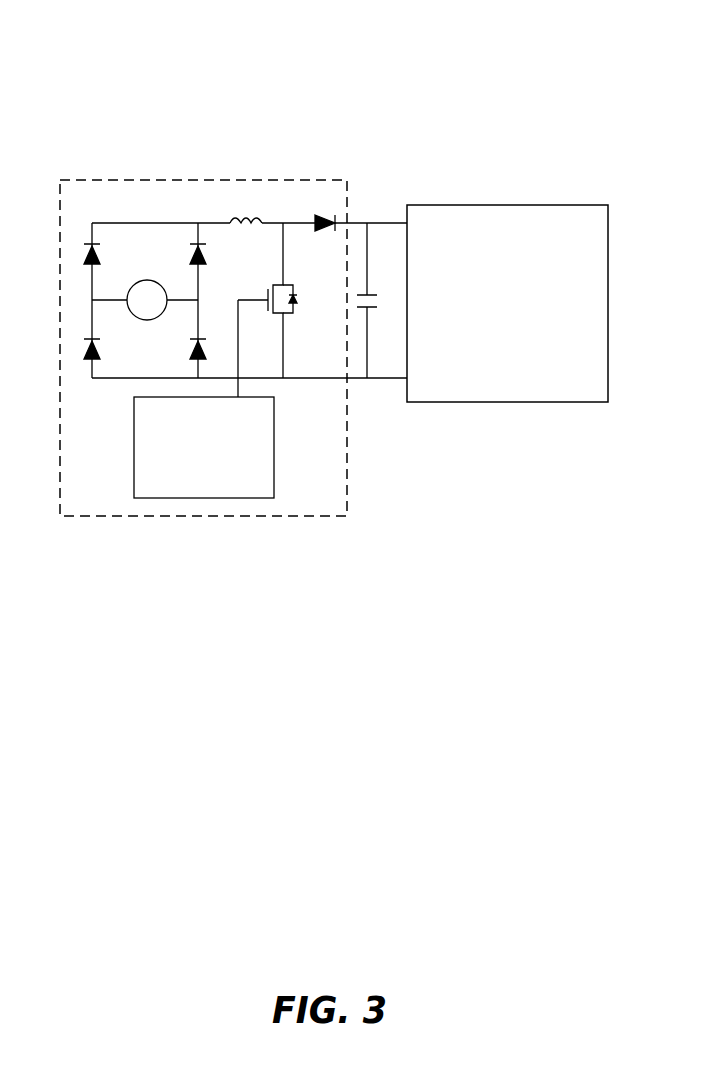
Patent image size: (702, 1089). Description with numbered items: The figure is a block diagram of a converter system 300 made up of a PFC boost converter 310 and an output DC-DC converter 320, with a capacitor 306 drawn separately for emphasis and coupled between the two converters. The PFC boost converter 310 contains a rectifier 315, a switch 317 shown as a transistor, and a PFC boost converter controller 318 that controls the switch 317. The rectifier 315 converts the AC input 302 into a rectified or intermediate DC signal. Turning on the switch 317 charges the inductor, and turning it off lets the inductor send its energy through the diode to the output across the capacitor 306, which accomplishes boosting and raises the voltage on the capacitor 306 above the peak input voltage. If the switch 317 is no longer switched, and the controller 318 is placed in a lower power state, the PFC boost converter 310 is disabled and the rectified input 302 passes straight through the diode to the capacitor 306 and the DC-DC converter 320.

The converter system 300 is at (147, 51).
The PFC boost converter 310 is at (135, 180).
The rectifier 315 is at (98, 391).
The AC input 302 is at (127, 294).
The switch 317 is at (280, 293).
The PFC boost converter controller 318 is at (190, 498).
The capacitor 306 is at (367, 293).
The DC-DC converter 320 is at (558, 205).